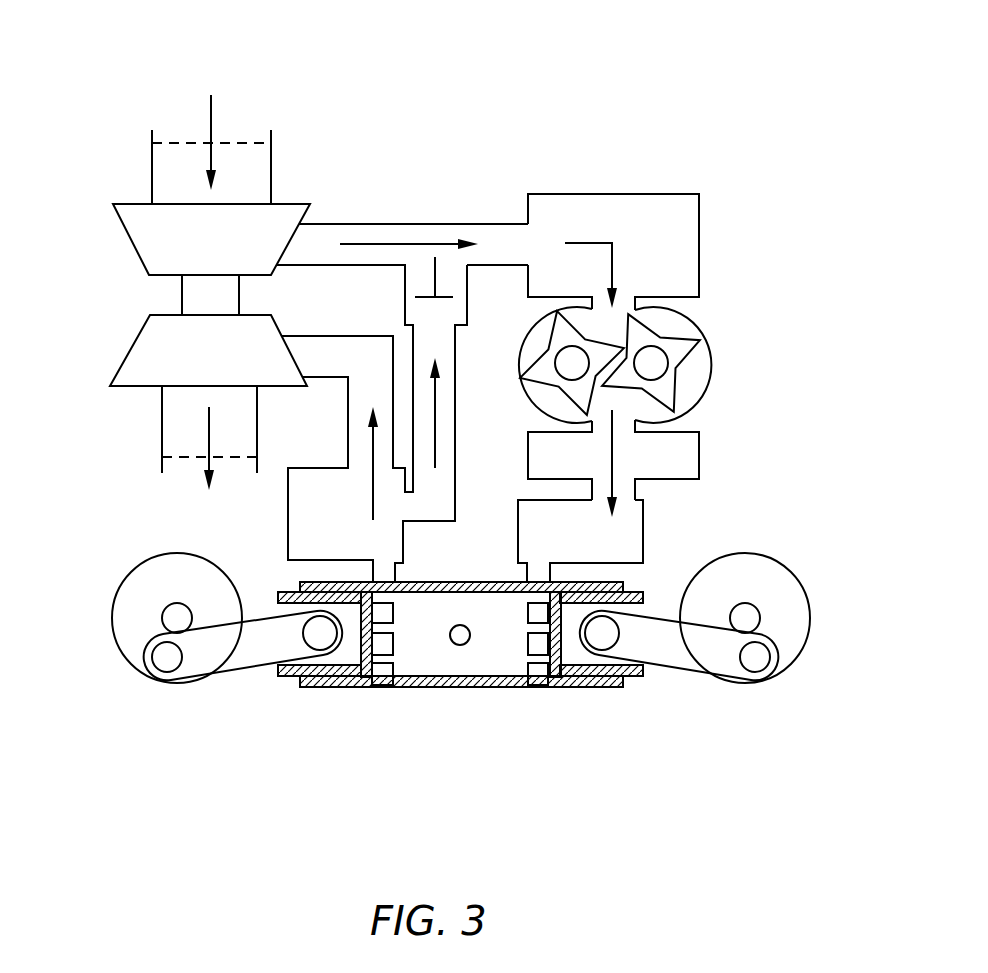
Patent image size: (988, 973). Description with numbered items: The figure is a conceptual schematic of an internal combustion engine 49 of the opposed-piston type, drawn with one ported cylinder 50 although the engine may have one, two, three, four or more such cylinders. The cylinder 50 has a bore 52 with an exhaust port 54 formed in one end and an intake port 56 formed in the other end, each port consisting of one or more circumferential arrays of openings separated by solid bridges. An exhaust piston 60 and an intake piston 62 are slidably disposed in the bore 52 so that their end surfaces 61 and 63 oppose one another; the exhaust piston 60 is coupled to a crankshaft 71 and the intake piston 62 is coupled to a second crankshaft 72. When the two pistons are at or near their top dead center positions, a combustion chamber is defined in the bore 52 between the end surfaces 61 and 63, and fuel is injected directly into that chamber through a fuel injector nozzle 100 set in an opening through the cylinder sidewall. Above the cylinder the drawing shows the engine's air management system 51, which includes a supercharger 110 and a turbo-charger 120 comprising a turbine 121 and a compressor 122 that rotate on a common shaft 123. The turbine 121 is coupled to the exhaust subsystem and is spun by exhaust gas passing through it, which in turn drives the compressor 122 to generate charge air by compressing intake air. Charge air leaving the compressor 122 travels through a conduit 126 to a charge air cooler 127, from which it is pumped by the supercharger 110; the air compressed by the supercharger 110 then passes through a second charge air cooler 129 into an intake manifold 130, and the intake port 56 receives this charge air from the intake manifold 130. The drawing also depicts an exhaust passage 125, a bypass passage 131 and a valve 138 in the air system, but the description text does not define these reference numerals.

The internal combustion engine 49 is at (787, 456).
The ported cylinder 50 is at (430, 582).
The air management system 51 is at (490, 52).
The bore 52 is at (480, 665).
The exhaust port 54 is at (385, 705).
The intake port 56 is at (537, 705).
The exhaust piston 60 is at (284, 688).
The end surface of exhaust piston 61 is at (378, 613).
The intake piston 62 is at (637, 585).
The end surface of intake piston 63 is at (545, 613).
The crankshaft 71 is at (178, 683).
The crankshaft 72 is at (748, 683).
The fuel injector nozzle 100 is at (465, 625).
The supercharger 110 is at (698, 318).
The turbo-charger 120 is at (116, 297).
The turbine 121 is at (122, 365).
The compressor 122 is at (130, 241).
The common shaft 123 is at (239, 294).
The exhaust pipe 125 is at (288, 528).
The conduit 126 is at (412, 224).
The charge air cooler 127 is at (699, 258).
The charge air cooler 129 is at (699, 445).
The intake manifold 130 is at (643, 540).
The bypass pipe 131 is at (455, 400).
The bypass valve 138 is at (435, 275).